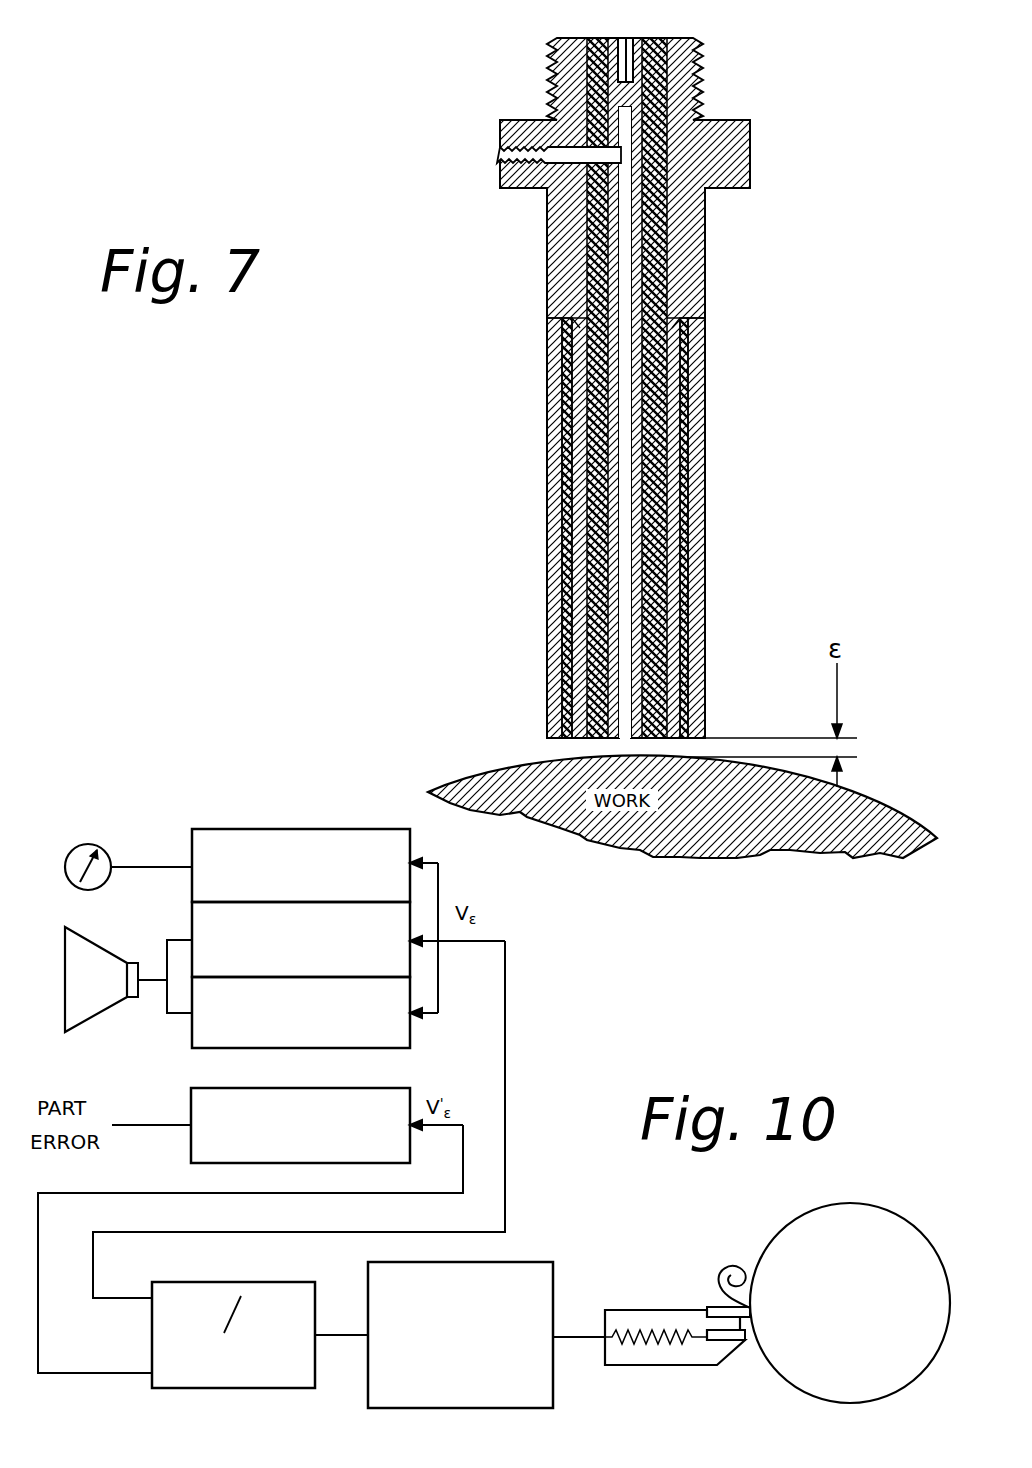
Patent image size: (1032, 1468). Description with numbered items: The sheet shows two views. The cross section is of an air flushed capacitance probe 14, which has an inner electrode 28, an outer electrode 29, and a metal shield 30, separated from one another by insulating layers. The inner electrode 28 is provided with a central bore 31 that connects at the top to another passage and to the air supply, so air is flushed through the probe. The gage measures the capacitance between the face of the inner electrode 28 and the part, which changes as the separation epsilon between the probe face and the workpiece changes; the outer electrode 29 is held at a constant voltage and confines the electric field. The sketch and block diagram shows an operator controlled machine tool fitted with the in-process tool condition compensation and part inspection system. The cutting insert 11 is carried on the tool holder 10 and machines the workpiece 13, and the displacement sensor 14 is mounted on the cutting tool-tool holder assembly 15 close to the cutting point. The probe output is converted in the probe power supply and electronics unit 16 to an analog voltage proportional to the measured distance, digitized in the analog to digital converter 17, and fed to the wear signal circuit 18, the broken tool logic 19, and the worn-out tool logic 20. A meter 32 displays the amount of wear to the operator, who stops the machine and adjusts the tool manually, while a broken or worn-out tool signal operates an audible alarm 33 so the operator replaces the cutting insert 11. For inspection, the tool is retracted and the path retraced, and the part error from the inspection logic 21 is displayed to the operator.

In FIG. 10, the tool holder 10 is at (637, 1312).
In FIG. 10, the cutting insert 11 is at (715, 1306).
In FIG. 10, the workpiece 13 is at (908, 1232).
In FIG. 10, the probe 14 is at (737, 1342).
In FIG. 10, the cutting tool-tool holder assembly 15 is at (645, 1372).
In FIG. 10, the probe power supply and electronics unit 16 is at (535, 1262).
In FIG. 10, the analog to digital converter 17 is at (185, 1285).
In FIG. 10, the wear signal circuit 18 is at (192, 840).
In FIG. 10, the broken tool logic 19 is at (192, 926).
In FIG. 10, the worn-out tool logic 20 is at (192, 1037).
In FIG. 10, the inspection logic 21 is at (192, 1092).
In FIG. 7, the inner electrode 28 is at (615, 522).
In FIG. 7, the outer electrode 29 is at (580, 612).
In FIG. 7, the metal shield 30 is at (558, 650).
In FIG. 7, the central bore 31 is at (627, 290).
In FIG. 10, the meter 32 is at (80, 847).
In FIG. 10, the audible alarm 33 is at (95, 1014).